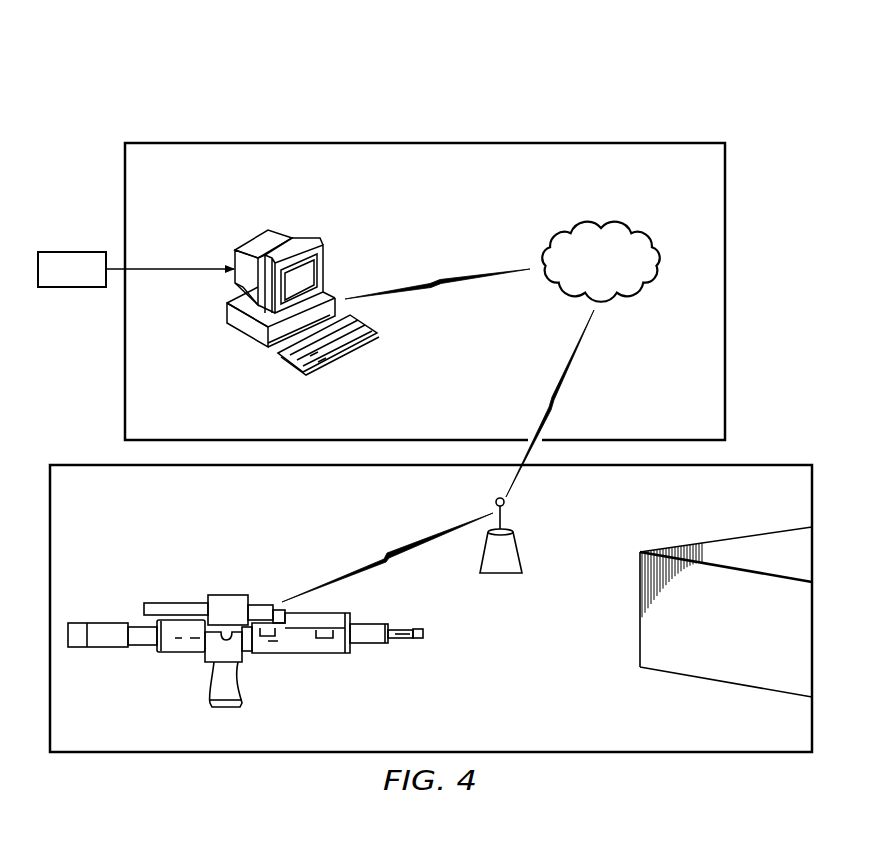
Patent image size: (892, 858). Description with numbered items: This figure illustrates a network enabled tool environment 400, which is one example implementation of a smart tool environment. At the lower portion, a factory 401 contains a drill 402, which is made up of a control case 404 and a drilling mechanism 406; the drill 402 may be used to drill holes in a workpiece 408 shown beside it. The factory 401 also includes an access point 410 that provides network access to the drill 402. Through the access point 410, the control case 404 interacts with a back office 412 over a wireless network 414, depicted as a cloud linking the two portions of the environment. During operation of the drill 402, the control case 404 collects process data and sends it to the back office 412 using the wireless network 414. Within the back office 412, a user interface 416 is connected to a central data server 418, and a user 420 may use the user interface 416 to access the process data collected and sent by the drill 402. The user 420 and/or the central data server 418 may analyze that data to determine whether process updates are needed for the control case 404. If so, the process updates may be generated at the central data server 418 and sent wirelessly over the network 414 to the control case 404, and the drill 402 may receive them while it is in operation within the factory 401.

The network enabled tool environment 400 is at (287, 100).
The factory 401 is at (452, 508).
The drill 402 is at (163, 672).
The control case 404 is at (229, 603).
The drilling mechanism 406 is at (402, 645).
The workpiece 408 is at (747, 618).
The access point 410 is at (523, 549).
The back office 412 is at (502, 204).
The network 414 is at (631, 223).
The user interface 416 is at (247, 229).
The central data server 418 is at (255, 331).
The user 420 is at (72, 252).